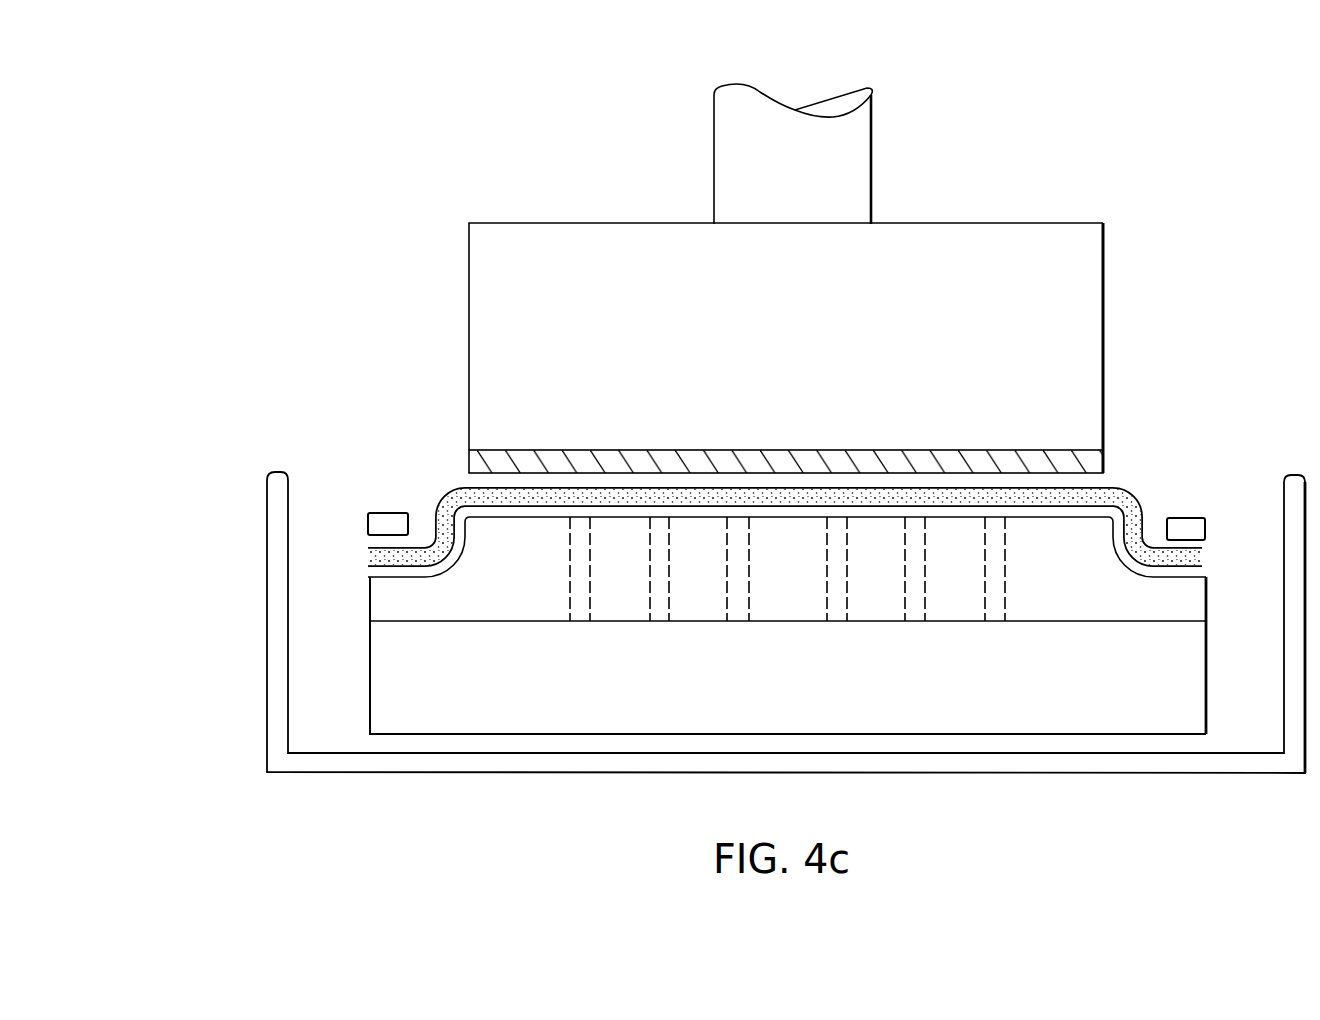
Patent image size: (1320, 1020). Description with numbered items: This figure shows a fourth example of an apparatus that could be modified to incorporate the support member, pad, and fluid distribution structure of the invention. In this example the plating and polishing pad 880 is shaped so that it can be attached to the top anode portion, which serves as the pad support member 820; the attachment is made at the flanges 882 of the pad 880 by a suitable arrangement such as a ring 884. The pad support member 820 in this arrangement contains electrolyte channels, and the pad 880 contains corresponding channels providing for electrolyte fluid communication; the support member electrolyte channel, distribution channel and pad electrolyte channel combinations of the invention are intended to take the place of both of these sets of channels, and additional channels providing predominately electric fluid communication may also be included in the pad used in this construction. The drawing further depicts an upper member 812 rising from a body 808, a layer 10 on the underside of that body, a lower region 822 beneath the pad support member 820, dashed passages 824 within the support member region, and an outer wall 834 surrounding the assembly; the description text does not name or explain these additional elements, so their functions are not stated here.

The shaft 812 is at (872, 150).
The carrier head body 808 is at (1104, 343).
The substrate 10 is at (1104, 465).
The plating and polishing pad 880 is at (442, 487).
The flanges 882 is at (380, 509).
The ring 884 is at (1190, 519).
The top anode portion (pad support member) 820 is at (407, 602).
The reservoir 822 is at (407, 687).
The passages 824 is at (993, 594).
The outer wall 834 is at (267, 532).